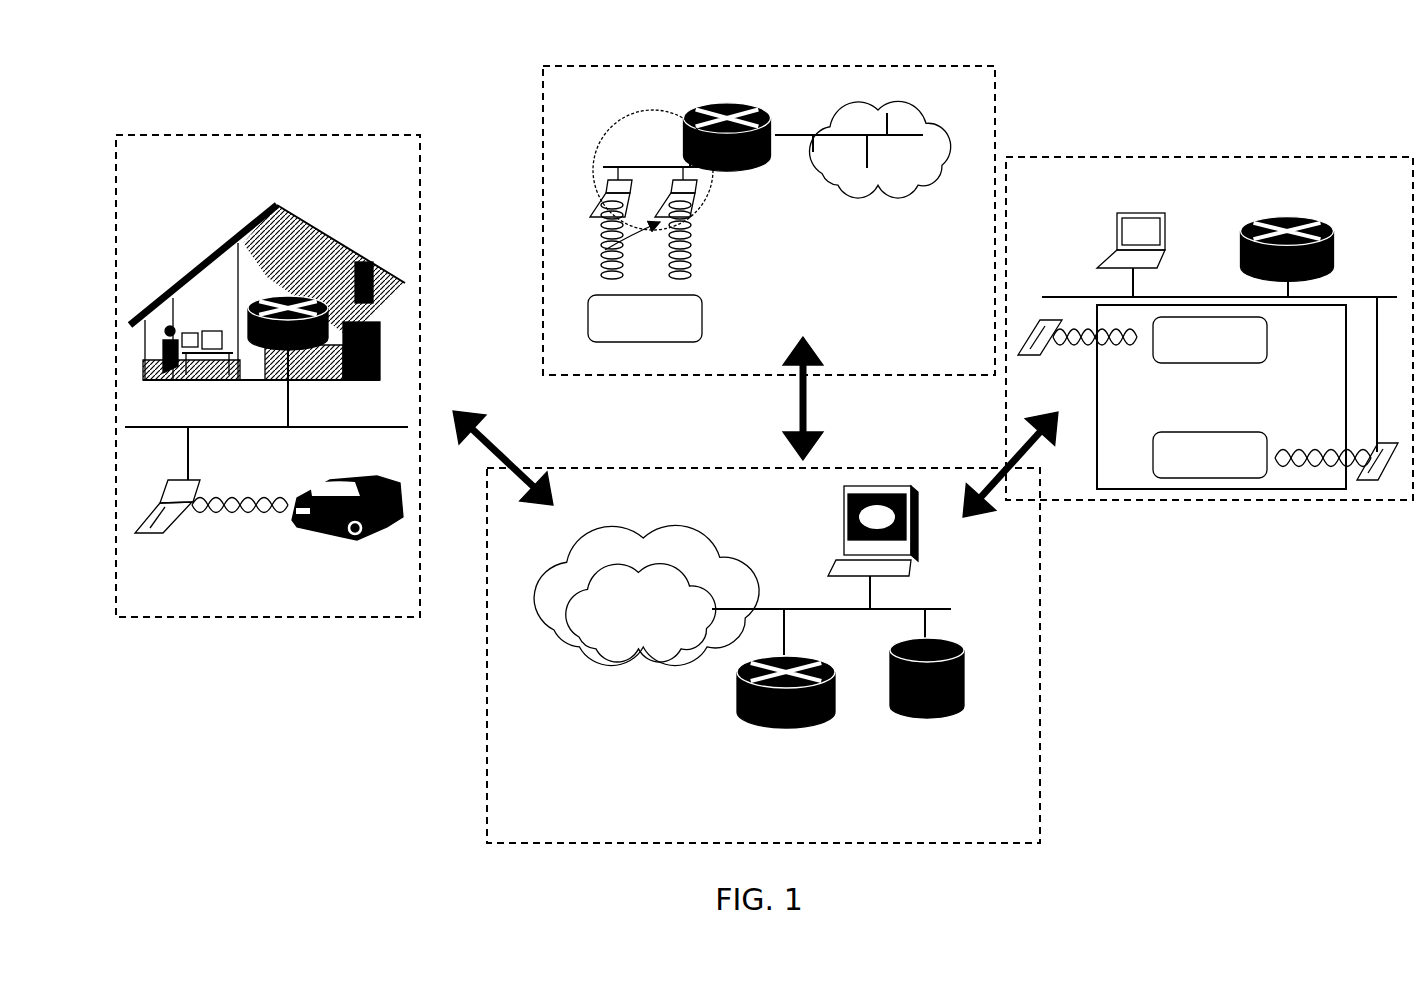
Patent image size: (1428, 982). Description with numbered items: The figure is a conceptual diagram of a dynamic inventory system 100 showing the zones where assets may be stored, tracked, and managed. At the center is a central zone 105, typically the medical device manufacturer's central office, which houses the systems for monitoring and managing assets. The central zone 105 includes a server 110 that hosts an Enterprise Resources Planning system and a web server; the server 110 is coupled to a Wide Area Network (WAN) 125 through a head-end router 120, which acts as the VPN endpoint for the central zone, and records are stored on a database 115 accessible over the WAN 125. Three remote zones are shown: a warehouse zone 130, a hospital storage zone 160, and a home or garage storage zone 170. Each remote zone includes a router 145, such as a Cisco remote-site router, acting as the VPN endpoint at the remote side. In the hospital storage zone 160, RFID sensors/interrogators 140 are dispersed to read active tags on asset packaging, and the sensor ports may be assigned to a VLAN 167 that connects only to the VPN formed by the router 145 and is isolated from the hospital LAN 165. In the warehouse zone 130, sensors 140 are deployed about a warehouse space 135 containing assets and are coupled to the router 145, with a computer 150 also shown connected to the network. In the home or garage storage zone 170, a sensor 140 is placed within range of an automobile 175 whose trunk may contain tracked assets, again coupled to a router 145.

The dynamic inventory system 100 is at (318, 85).
The central zone 105 is at (1052, 752).
The server 110 is at (939, 543).
The database 115 is at (947, 763).
The head-end router 120 is at (773, 755).
The Wide Area Network (WAN) 125 is at (595, 687).
The warehouse zone 130 is at (1185, 100).
The warehouse space 135 is at (1238, 410).
The RFID sensor/interrogator 140 is at (167, 552).
The router 145 is at (375, 330).
The computer 150 is at (1110, 213).
The hospital storage zone 160 is at (535, 95).
The hospital zone LAN 165 is at (888, 197).
The VLAN 167 is at (707, 187).
The home or garage storage zone 170 is at (200, 642).
The automobile 175 is at (355, 550).